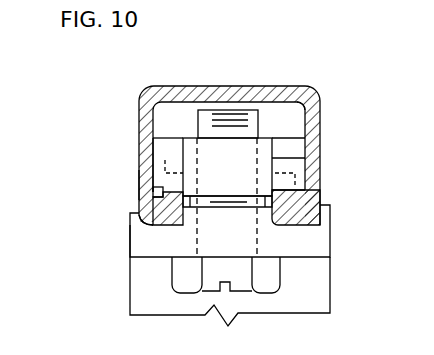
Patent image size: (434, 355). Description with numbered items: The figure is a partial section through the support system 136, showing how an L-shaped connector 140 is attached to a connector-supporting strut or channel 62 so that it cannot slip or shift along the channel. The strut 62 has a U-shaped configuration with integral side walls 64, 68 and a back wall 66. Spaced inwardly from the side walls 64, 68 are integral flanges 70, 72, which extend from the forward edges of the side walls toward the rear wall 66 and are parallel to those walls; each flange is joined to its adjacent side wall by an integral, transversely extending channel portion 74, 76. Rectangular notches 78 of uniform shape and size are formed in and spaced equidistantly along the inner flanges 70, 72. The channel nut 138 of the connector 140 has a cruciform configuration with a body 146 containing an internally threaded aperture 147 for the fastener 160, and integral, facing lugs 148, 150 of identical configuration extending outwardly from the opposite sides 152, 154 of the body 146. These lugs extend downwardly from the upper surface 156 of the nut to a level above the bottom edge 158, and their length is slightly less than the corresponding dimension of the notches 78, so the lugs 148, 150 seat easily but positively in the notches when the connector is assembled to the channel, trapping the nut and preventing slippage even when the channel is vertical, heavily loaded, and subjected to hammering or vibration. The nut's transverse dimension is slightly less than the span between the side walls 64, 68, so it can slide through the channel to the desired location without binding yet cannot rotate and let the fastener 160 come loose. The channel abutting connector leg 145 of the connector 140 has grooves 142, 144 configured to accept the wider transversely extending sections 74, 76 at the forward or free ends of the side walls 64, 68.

The support system 136 is at (135, 80).
The strut 62 is at (247, 84).
The back wall 66 is at (203, 85).
The side wall 64 is at (144, 118).
The side wall 68 is at (320, 112).
The upper surface 156 is at (262, 136).
The internally threaded aperture 147 is at (197, 134).
The body 146 is at (227, 197).
The side of the body 152 is at (147, 150).
The lug 148 is at (147, 166).
The channel nut 138 is at (143, 183).
The flange 70 is at (155, 194).
The groove 142 is at (140, 218).
The transversely extending channel portion 74 is at (165, 226).
The transversely extending channel portion 76 is at (291, 226).
The bottom edge 158 is at (254, 218).
The lug 150 is at (305, 132).
The side of the body 154 is at (285, 158).
The rectangular notches 78 is at (300, 172).
The flange 72 is at (305, 190).
The groove 144 is at (322, 207).
The channel abutting connector leg 145 is at (130, 236).
The L-shaped connector 140 is at (129, 270).
The fastener 160 is at (285, 278).